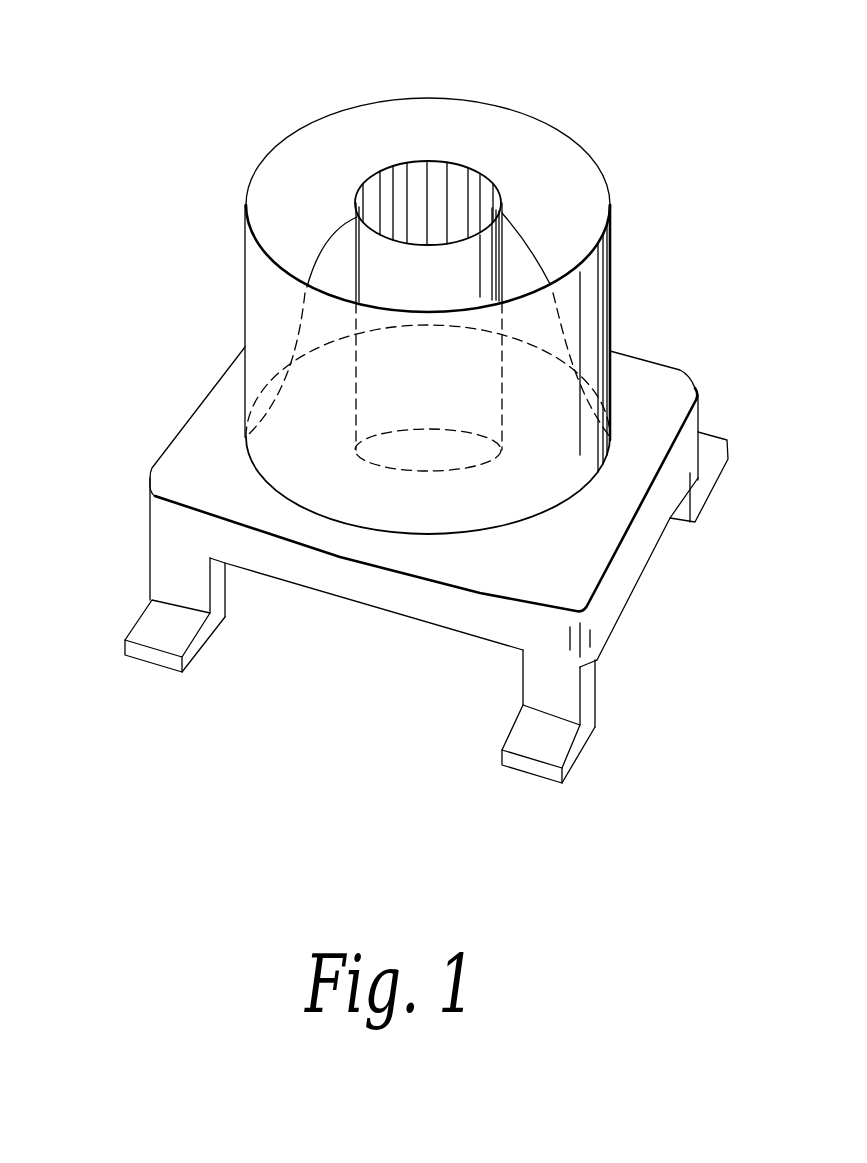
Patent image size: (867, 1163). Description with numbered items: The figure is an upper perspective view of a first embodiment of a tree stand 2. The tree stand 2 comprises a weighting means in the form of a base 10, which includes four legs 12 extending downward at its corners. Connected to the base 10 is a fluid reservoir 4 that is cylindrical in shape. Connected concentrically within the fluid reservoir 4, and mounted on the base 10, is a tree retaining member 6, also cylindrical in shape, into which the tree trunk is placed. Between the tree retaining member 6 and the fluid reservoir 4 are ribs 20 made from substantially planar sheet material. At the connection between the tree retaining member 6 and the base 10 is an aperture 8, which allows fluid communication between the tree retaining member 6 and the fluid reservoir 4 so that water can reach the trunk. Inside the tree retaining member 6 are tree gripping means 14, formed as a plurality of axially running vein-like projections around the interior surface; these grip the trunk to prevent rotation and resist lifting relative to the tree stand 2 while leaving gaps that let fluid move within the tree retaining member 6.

The tree stand 2 is at (647, 258).
The fluid reservoir 4 is at (243, 258).
The tree retaining member 6 is at (402, 160).
The aperture 8 is at (420, 437).
The base 10 is at (183, 462).
The legs 12 is at (163, 623).
The tree gripping means 14 is at (428, 180).
The ribs 20 is at (328, 246).